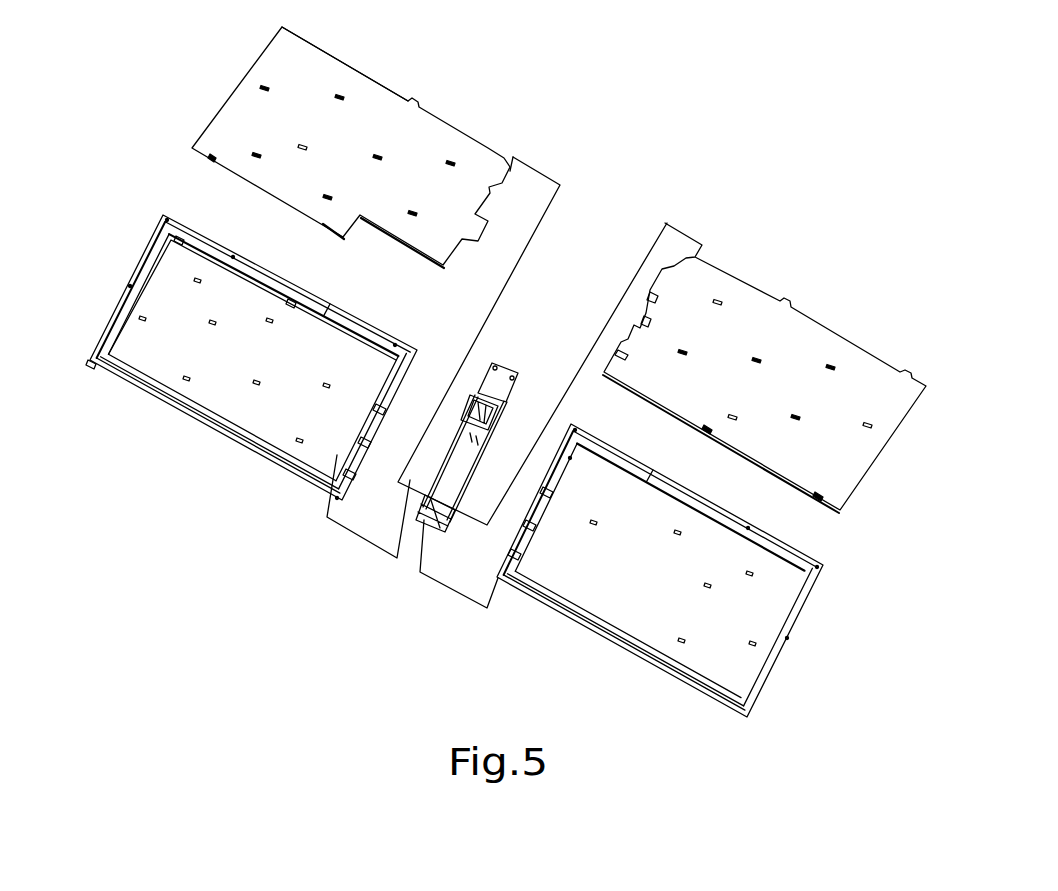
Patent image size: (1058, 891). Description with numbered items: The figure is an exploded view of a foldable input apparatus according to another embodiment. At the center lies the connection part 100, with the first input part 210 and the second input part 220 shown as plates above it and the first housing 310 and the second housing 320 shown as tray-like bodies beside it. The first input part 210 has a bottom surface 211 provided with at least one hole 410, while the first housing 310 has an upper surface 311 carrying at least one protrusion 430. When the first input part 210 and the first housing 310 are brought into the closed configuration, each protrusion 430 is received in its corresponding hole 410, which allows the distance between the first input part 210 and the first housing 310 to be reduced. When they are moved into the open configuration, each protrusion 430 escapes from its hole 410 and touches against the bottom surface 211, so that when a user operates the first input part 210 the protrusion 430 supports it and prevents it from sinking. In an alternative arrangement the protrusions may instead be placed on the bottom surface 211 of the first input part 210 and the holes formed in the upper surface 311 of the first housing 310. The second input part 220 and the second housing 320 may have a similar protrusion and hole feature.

The connection part 100 is at (511, 355).
The first input part 210 is at (351, 134).
The bottom surface 211 is at (285, 72).
The second input part 220 is at (873, 385).
The first housing 310 is at (233, 357).
The upper surface 311 is at (155, 355).
The second housing 320 is at (747, 678).
The hole 410 is at (338, 95).
The protrusion 430 is at (140, 316).